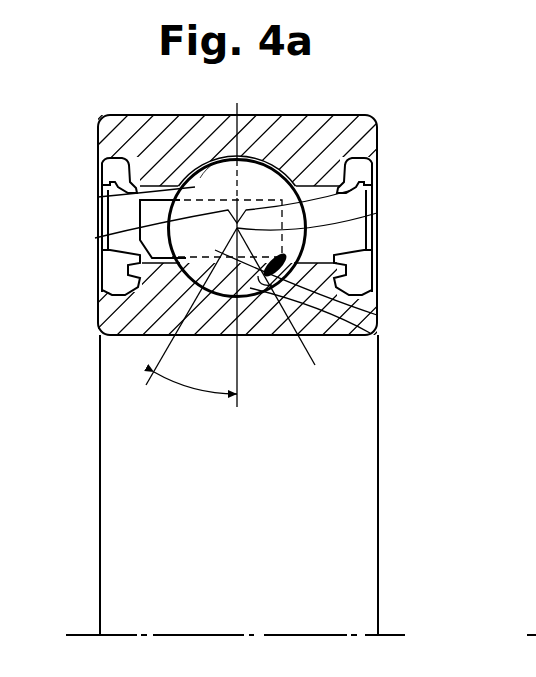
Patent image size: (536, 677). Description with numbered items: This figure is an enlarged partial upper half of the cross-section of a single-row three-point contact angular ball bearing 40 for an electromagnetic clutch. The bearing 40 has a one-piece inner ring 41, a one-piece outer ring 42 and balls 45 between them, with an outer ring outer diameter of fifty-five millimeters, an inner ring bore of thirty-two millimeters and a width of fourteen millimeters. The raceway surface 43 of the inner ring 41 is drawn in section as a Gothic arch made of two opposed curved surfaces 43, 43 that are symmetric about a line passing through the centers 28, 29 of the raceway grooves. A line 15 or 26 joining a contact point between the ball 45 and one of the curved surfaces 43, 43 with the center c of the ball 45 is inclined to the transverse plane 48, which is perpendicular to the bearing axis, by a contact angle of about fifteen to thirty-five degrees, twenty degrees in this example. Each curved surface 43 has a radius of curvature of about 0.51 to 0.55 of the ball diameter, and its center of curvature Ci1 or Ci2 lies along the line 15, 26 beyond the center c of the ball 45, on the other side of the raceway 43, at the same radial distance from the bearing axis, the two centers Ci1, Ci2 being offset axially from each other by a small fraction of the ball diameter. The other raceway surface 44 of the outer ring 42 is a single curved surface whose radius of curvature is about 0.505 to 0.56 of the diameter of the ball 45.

The bearing 40 is at (319, 107).
The inner ring 41 is at (366, 299).
The outer ring 42 is at (381, 143).
The raceway surface 43 is at (110, 318).
The raceway surface 44 is at (100, 133).
The ball 45 is at (190, 201).
The line 15 is at (303, 345).
The line 26 is at (157, 362).
The center of raceway groove 28 is at (240, 160).
The center of raceway groove 29 is at (358, 231).
The transverse plane 48 is at (240, 386).
The center of curvature Ci1 is at (98, 197).
The center of curvature Ci2 is at (360, 198).
The center of ball c is at (237, 225).